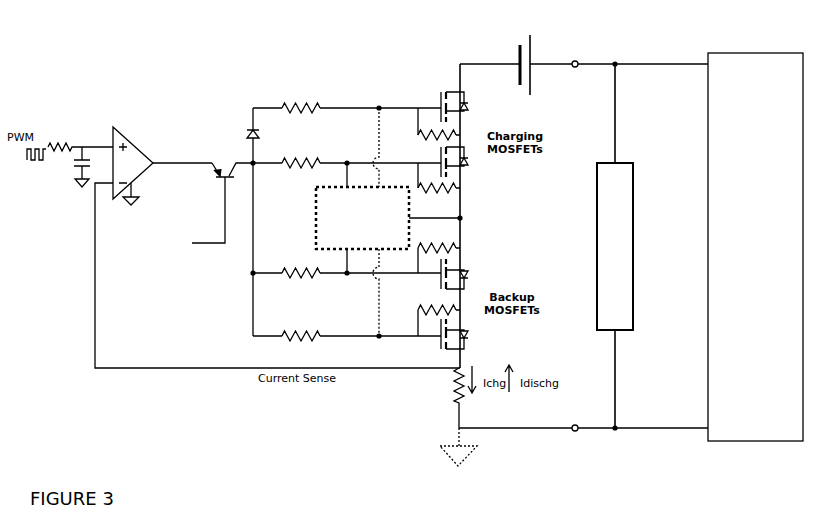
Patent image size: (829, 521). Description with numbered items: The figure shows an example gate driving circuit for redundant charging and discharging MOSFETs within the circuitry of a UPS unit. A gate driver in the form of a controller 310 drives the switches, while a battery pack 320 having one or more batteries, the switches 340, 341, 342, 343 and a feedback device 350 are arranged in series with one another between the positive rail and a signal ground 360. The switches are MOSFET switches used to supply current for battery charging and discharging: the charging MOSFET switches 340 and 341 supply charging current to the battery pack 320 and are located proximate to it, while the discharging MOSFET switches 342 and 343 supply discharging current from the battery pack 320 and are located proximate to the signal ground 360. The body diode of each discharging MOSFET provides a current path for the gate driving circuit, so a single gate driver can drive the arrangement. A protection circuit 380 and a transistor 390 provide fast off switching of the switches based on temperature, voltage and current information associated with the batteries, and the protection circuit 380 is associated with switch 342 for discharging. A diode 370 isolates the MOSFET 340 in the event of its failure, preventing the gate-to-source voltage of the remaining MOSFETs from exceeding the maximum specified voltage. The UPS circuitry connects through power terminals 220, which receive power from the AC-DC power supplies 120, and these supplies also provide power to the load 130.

The controller 310 is at (143, 148).
The transistor 390 is at (222, 171).
The diode 370 is at (262, 137).
The protection circuit 380 is at (316, 241).
The charging MOSFET switch 340 is at (470, 121).
The charging MOSFET switch 341 is at (470, 176).
The discharging MOSFET switch 342 is at (470, 289).
The discharging MOSFET switch 343 is at (470, 351).
The feedback device 350 is at (454, 406).
The signal ground 360 is at (446, 458).
The battery pack 320 is at (530, 50).
The power terminals 220 is at (576, 67).
The load 130 is at (627, 161).
The AC-DC power supplies 120 is at (705, 442).